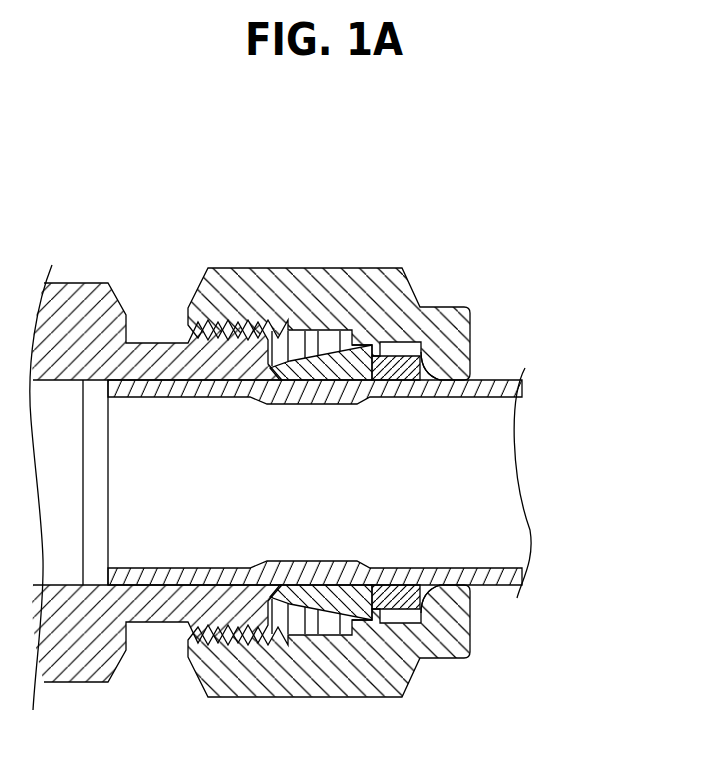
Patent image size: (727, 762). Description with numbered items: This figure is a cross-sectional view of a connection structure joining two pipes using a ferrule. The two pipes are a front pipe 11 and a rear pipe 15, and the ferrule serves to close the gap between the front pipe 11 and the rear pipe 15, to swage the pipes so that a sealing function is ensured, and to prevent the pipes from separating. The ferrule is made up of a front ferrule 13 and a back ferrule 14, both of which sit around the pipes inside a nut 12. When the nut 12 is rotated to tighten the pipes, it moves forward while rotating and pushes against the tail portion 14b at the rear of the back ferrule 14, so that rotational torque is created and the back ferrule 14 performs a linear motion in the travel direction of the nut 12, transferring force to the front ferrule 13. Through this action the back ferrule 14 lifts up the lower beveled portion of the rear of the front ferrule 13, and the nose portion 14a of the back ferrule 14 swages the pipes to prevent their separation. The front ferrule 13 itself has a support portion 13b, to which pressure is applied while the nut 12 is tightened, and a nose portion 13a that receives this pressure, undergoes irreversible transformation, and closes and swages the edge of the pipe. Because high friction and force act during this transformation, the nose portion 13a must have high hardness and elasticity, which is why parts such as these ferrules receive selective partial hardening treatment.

The front pipe 11 is at (83, 307).
The nut 12 is at (463, 332).
The front ferrule 13 is at (327, 332).
The nose portion 13a is at (285, 372).
The support portion 13b is at (360, 345).
The back ferrule 14 is at (415, 330).
The nose portion 14a is at (398, 340).
The tail portion 14b is at (422, 348).
The rear pipe 15 is at (522, 383).